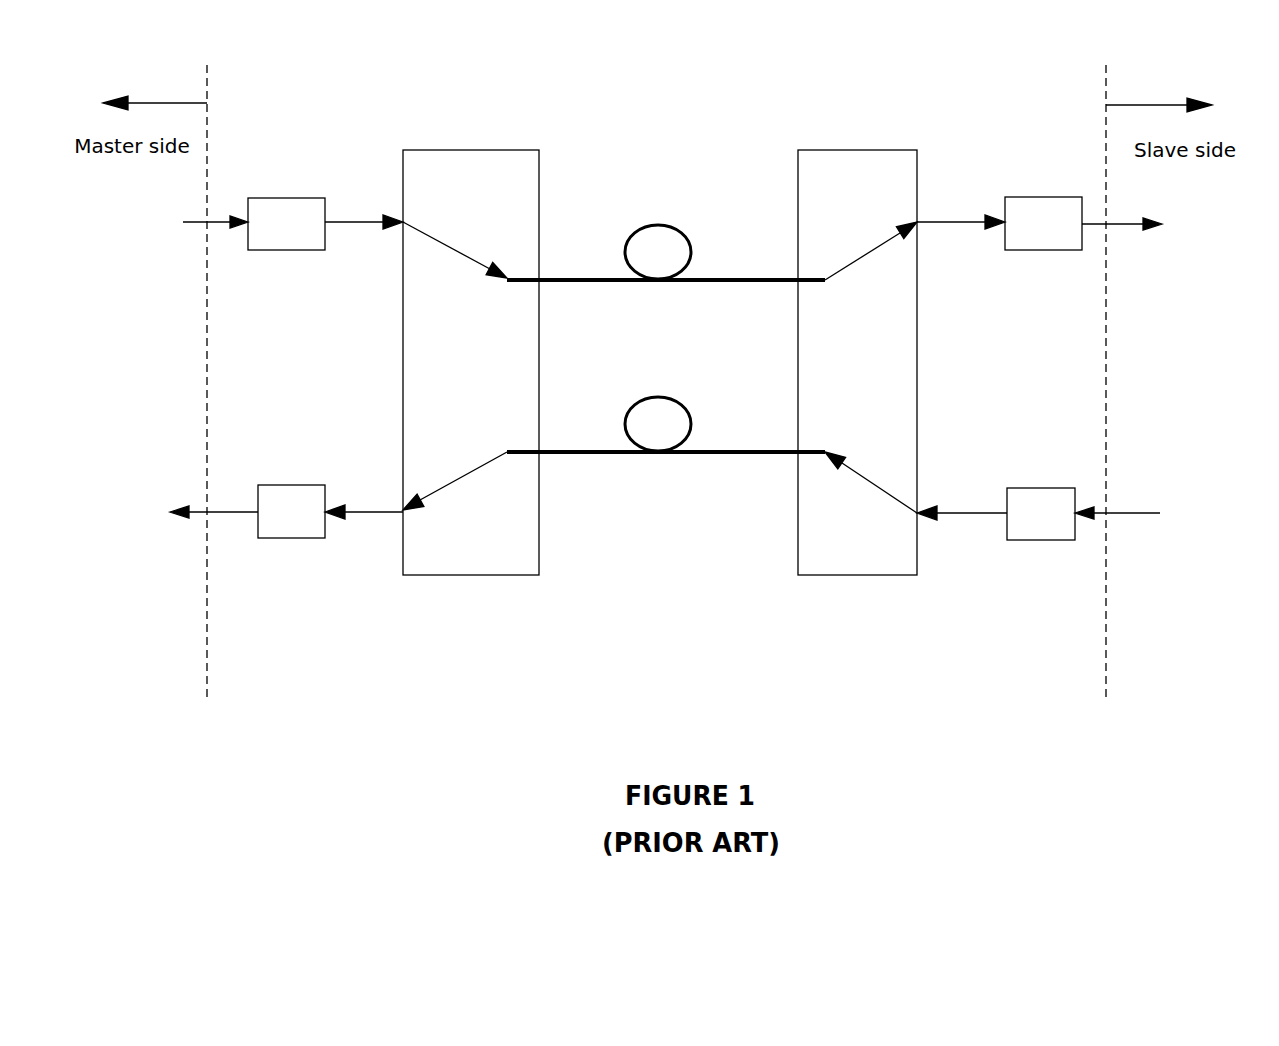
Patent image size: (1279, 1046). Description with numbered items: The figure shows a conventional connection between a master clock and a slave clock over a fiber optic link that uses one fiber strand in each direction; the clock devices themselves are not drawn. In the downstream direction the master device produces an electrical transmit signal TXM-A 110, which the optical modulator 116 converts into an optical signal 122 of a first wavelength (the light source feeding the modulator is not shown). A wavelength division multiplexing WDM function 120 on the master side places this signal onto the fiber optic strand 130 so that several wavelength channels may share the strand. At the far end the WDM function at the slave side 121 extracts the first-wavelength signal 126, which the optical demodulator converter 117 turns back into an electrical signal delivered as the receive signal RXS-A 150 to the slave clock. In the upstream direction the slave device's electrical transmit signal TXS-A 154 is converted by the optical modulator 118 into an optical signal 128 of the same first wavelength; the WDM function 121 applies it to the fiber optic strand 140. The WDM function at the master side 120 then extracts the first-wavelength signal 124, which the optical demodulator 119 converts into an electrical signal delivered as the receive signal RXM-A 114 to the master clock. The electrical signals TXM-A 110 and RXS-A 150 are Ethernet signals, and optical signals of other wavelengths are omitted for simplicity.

The transmit signal TXM-A 110 is at (171, 218).
The receive signal RXM-A 114 is at (171, 511).
The optical modulator 116 is at (317, 258).
The optical demodulator converter 117 is at (1042, 258).
The optical modulator 118 is at (1040, 478).
The optical demodulator 119 is at (295, 475).
The WDM function at the master side 120 is at (471, 346).
The WDM function at the slave side 121 is at (857, 346).
The optical signal 122 is at (352, 217).
The wavelength λ1 signal 124 is at (367, 520).
The wavelength λ1 signal 126 is at (960, 217).
The optical signal 128 is at (975, 520).
The fiber optic strand 130 is at (743, 278).
The fiber optic strand 140 is at (752, 468).
The receive signal RXS-A 150 is at (1168, 223).
The transmit signal TXS-A 154 is at (1159, 511).